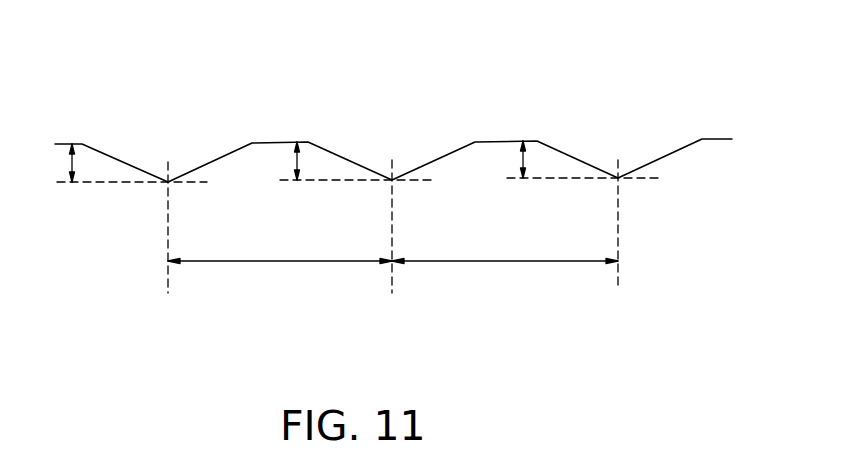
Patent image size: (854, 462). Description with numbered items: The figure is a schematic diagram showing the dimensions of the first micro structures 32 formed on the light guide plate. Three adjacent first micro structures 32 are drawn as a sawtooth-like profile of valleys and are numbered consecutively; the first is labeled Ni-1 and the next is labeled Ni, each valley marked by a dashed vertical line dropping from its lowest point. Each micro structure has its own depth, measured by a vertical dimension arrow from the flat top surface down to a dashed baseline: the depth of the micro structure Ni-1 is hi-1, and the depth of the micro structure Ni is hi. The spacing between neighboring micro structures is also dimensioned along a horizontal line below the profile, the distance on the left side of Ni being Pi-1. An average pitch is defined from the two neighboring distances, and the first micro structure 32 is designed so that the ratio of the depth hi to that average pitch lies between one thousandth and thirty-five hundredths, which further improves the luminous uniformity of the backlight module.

The first micro structure 32 is at (71, 58).
The first micro structure numbered N i-1 Ni-1 is at (166, 208).
The first micro structure numbered N i Ni is at (384, 207).
The depth of micro structure N i-1 hi-1 is at (51, 163).
The depth of micro structure N i hi is at (276, 161).
The distance p i-1 Pi-1 is at (280, 276).